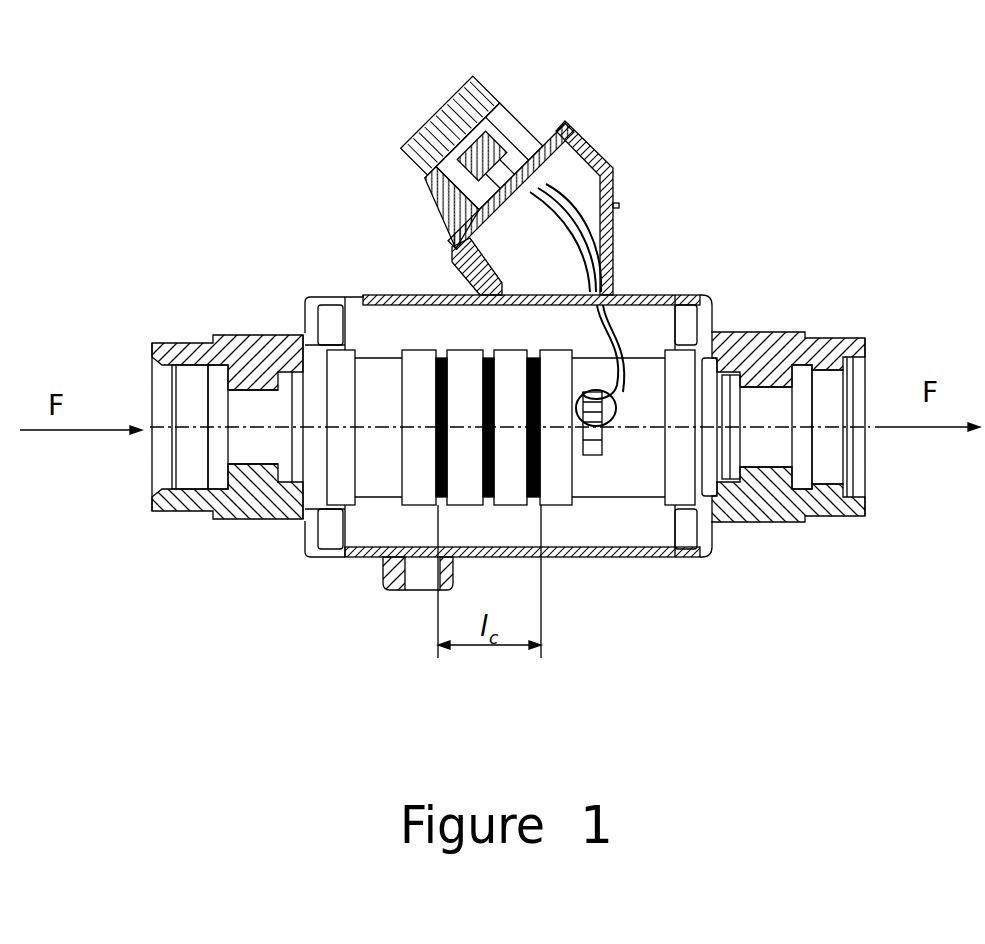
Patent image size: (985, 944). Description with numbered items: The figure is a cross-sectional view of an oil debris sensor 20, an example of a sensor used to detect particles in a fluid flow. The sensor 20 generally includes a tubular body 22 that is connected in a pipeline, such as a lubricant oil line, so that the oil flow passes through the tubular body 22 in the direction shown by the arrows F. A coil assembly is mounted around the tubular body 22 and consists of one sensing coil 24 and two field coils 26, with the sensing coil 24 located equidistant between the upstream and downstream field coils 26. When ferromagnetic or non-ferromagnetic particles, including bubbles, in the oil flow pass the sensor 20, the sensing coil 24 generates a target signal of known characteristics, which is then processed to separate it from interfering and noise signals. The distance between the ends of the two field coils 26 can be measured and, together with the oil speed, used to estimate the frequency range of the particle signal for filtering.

The oil debris sensor 20 is at (757, 184).
The tubular body 22 is at (766, 531).
The sensing coil 24 is at (471, 354).
The field coils 26 is at (512, 499).